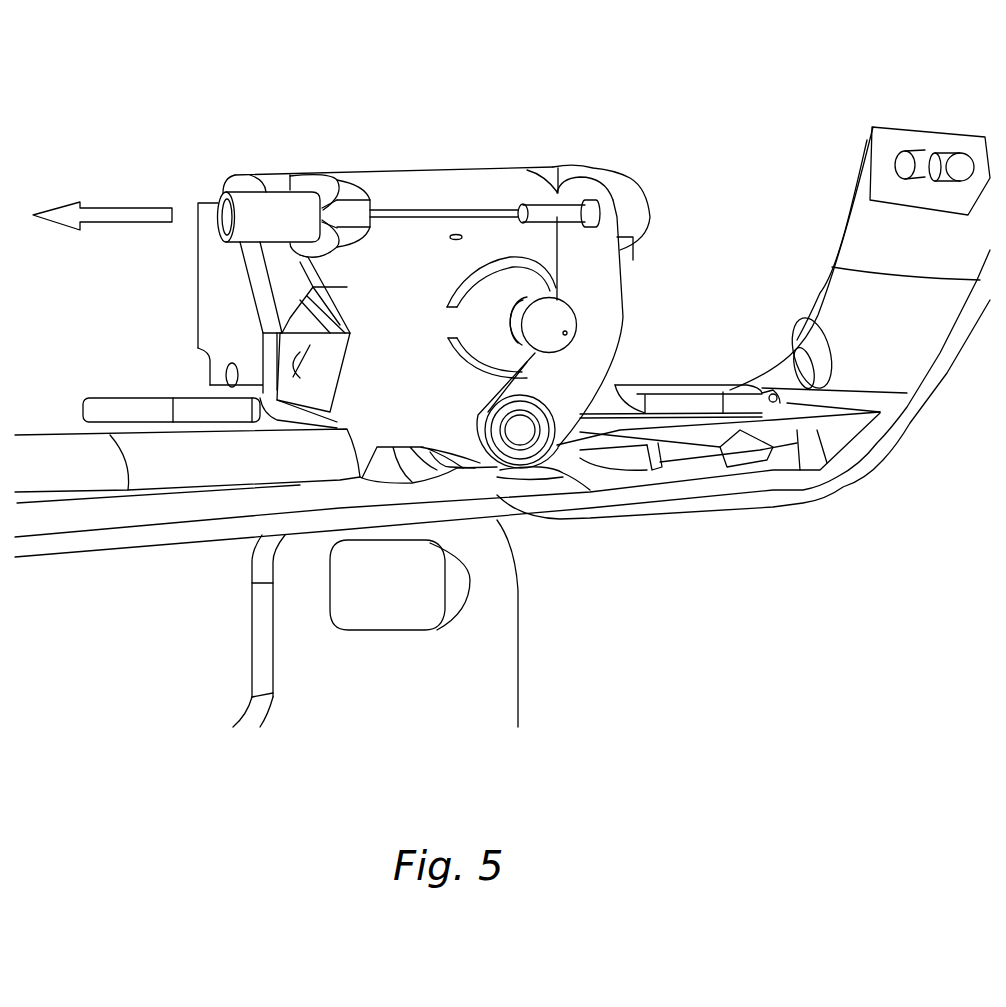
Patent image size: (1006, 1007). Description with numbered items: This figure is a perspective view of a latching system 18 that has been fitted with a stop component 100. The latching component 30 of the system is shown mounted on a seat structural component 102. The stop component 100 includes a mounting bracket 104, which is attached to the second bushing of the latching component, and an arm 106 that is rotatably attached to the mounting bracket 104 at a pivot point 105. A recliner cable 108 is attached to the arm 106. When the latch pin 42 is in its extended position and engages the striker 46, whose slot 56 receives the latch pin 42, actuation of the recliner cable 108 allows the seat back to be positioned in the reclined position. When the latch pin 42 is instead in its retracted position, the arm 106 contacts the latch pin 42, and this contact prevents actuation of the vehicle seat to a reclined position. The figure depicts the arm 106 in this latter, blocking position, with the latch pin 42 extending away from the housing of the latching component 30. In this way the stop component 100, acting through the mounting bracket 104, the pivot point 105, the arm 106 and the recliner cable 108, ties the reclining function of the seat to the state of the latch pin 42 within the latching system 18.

The latching system 18 is at (594, 112).
The latching component 30 is at (382, 170).
The latch pin 42 is at (567, 322).
The striker 46 is at (517, 638).
The slot 56 is at (363, 590).
The stop component 100 is at (207, 172).
The seat structural component 102 is at (790, 480).
The mounting bracket 104 is at (347, 287).
The pivot point 105 is at (522, 432).
The arm 106 is at (610, 297).
The recliner cable 108 is at (478, 208).